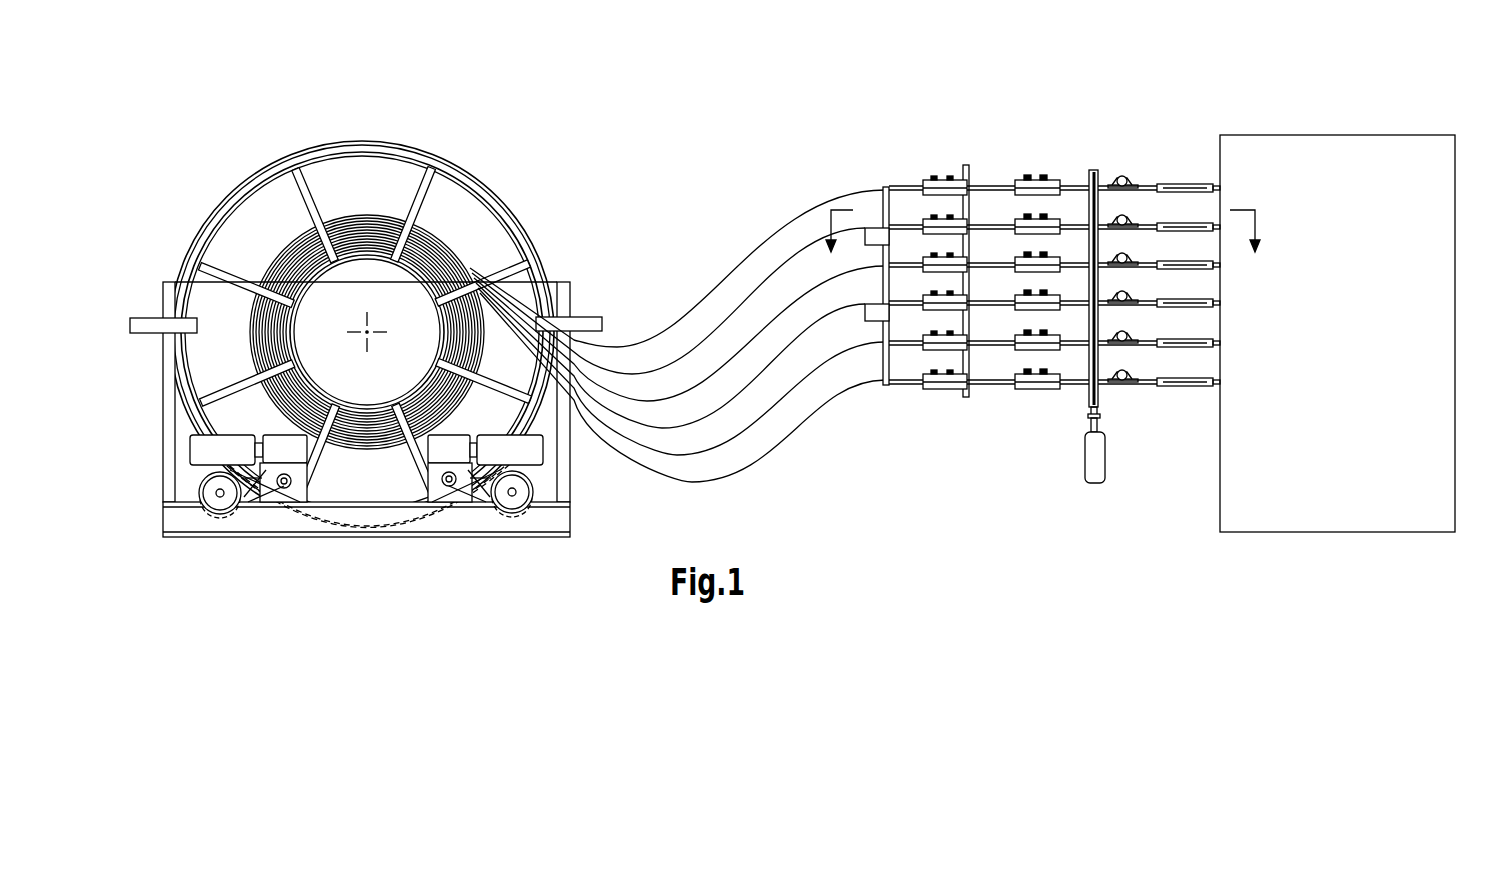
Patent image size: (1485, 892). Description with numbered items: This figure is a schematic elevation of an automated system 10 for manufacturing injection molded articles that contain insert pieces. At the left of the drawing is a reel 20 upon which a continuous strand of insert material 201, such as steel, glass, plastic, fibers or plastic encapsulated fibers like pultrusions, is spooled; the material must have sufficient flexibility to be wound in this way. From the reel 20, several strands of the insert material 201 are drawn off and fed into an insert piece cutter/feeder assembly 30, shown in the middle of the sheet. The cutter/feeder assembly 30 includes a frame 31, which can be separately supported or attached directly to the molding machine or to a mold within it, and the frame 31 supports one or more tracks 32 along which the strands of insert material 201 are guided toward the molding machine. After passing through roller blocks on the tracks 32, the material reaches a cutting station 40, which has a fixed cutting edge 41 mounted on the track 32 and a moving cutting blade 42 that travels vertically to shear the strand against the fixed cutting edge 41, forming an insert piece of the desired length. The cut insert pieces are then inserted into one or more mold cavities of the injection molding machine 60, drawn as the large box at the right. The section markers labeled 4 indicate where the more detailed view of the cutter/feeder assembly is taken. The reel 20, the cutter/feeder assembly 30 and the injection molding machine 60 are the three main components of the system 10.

The automated system 10 is at (686, 113).
The reel 20 is at (365, 128).
The insert material 201 is at (716, 232).
The insert piece cutter/feeder assembly 30 is at (1025, 240).
The frame 31 is at (876, 180).
The track 32 is at (980, 165).
The cutting station 40 is at (1104, 290).
The fixed cutting edge 41 is at (1089, 400).
The moving cutting blade 42 is at (1100, 410).
The injection molding machine 60 is at (1352, 339).
The section marker 4 is at (1044, 242).